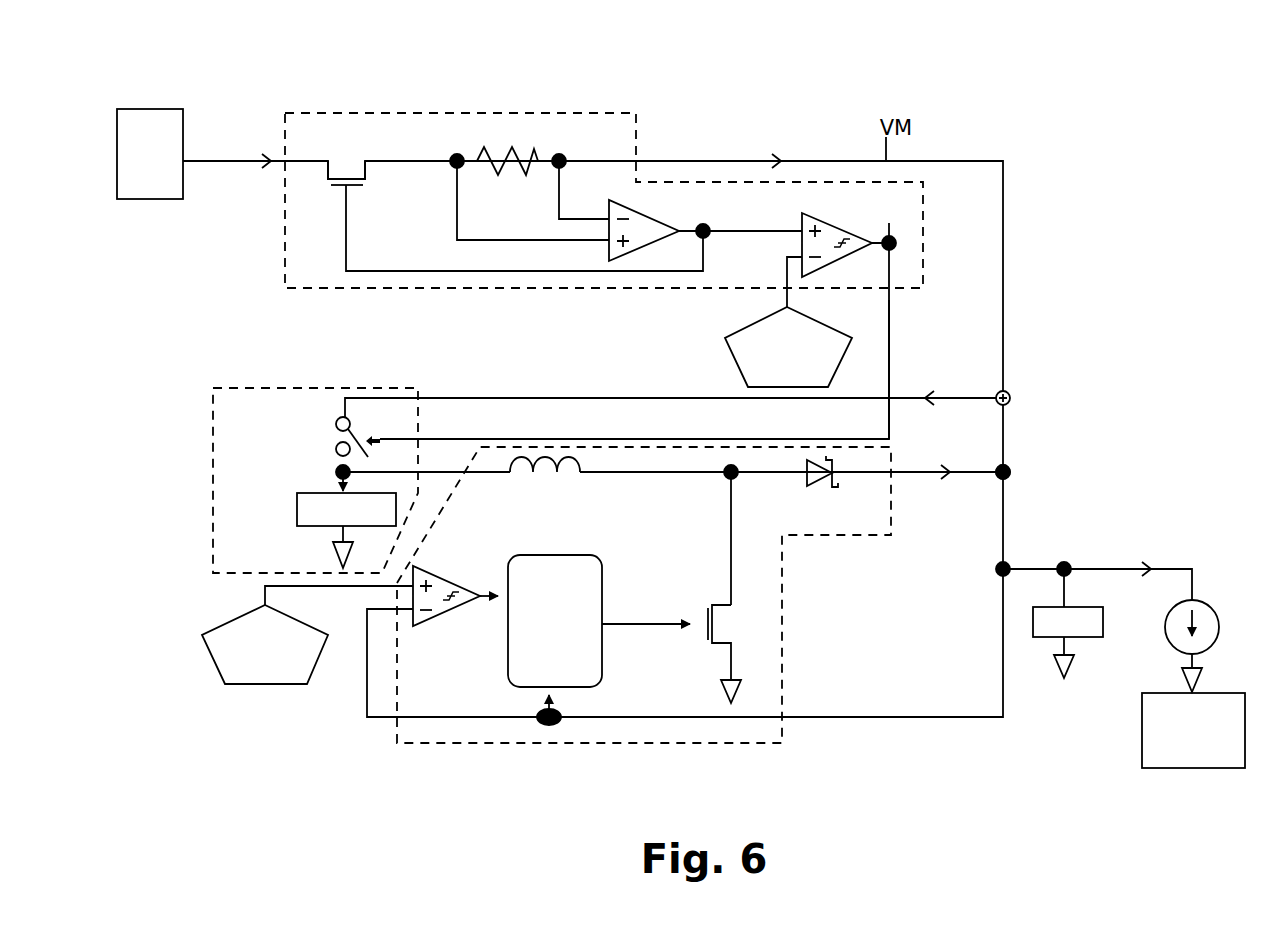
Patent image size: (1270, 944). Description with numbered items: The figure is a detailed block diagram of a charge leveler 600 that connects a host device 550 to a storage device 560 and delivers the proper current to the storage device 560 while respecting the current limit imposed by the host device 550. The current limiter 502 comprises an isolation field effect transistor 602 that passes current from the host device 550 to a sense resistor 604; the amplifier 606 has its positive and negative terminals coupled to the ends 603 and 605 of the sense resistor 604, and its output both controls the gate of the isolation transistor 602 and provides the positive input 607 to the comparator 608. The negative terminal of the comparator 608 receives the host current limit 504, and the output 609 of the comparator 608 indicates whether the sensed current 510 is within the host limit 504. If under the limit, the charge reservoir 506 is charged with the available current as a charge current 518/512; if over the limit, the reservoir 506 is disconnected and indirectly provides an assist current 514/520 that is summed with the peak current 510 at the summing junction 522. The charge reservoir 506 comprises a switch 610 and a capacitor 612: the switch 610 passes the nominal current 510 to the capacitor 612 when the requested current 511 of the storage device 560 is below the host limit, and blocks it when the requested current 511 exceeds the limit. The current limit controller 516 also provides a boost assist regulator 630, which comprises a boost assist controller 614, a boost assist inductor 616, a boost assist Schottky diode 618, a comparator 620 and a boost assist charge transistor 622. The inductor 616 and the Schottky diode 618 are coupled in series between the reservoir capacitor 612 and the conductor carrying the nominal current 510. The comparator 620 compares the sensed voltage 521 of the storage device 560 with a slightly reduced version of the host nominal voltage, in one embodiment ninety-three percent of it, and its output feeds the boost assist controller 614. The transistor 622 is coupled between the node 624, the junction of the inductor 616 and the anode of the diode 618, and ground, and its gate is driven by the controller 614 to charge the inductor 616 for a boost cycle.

The host device 550 is at (163, 108).
The current limiter 502 is at (469, 113).
The isolation field effect transistor 602 is at (370, 161).
The end of sense resistor 603 is at (456, 169).
The sense resistor 604 is at (525, 149).
The end of sense resistor 605 is at (562, 154).
The amplifier 606 is at (645, 210).
The positive input to comparator 607 is at (748, 233).
The comparator 608 is at (838, 222).
The output of comparator 609 is at (889, 333).
The pre-determined peak current 510 is at (767, 160).
The current limit 504 is at (810, 313).
The charge current 518 is at (851, 372).
The charge current 512 is at (940, 397).
The summing junction 522 is at (1010, 396).
The charge reservoir 506 is at (213, 440).
The switch 610 is at (340, 437).
The capacitor 612 is at (297, 512).
The boost assist inductor 616 is at (578, 481).
The node 624 is at (725, 482).
The boost assist Schottky diode 618 is at (812, 485).
The assist current 514 is at (961, 500).
The assist current 520 is at (972, 479).
The sensed voltage 521 is at (1066, 561).
The requested current 511 is at (1170, 568).
The storage device 560 is at (1142, 741).
The boost assist controller 614 is at (602, 578).
The comparator 620 is at (430, 621).
The boost assist charge transistor 622 is at (720, 647).
The current limit controller 516 is at (292, 706).
The boost assist regulator 630 is at (760, 745).
The charge leveler 600 is at (1112, 103).